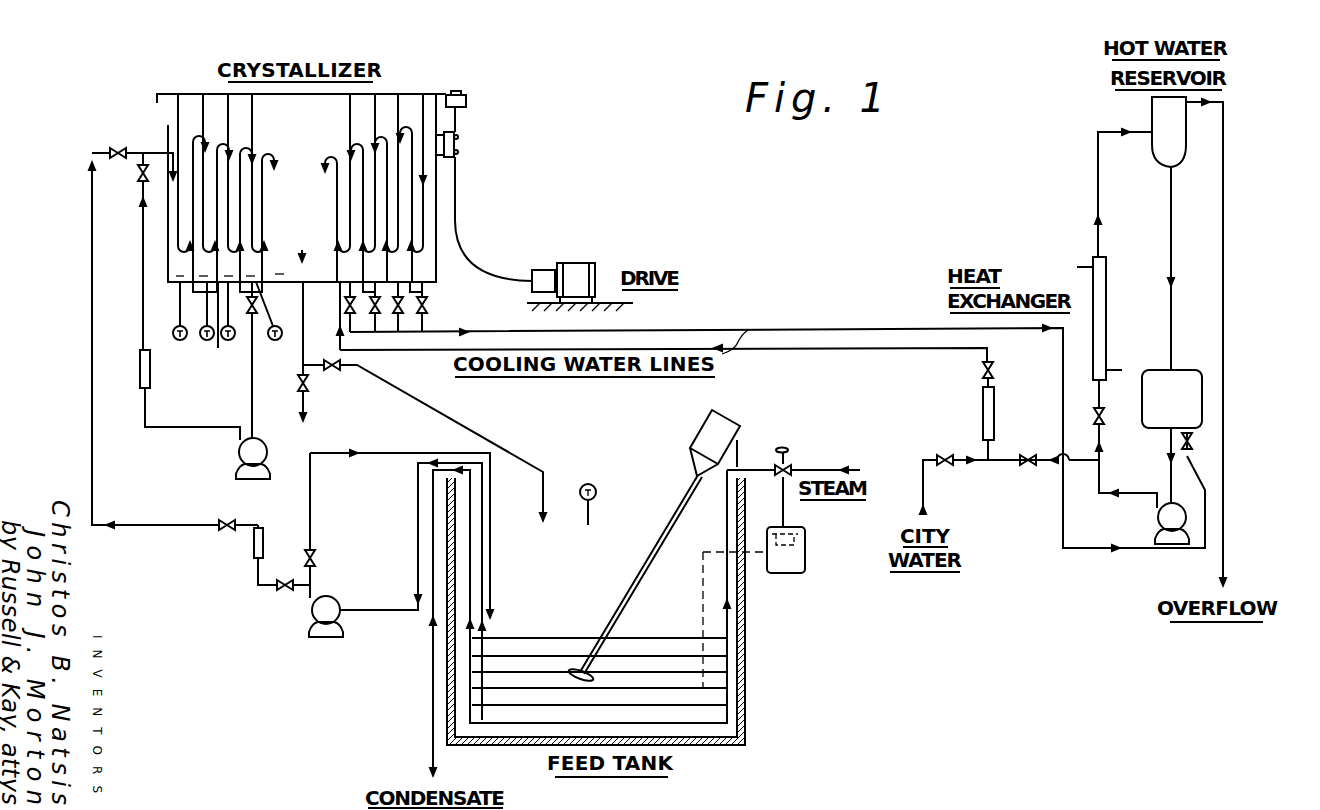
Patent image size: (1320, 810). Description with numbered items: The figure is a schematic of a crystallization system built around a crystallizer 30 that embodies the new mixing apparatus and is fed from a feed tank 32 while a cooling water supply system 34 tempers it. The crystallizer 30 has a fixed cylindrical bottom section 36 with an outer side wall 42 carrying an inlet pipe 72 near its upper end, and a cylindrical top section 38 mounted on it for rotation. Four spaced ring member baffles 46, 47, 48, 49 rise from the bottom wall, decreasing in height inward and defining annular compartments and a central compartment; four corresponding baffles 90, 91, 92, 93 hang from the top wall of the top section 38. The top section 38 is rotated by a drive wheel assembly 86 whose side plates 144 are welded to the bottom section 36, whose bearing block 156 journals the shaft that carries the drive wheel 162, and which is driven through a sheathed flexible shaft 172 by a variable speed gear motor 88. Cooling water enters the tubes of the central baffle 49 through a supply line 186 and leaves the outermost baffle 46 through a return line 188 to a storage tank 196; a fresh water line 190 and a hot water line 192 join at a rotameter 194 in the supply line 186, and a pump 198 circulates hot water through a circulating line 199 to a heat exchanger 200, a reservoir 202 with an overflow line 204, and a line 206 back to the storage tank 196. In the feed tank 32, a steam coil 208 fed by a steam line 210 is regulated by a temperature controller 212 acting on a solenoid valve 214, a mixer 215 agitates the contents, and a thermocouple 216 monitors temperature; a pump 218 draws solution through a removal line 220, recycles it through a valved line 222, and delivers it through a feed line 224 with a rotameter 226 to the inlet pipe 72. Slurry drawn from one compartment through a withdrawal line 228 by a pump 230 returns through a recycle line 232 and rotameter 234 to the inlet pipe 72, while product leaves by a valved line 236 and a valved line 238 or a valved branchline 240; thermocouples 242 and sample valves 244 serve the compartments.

The crystallizer 30 is at (109, 121).
The feed tank 32 is at (756, 728).
The cooling water supply system 34 is at (1030, 578).
The cylindrical bottom section 36 is at (158, 266).
The cylindrical top section 38 is at (173, 91).
The outer side wall 42 is at (168, 213).
The ring member baffle 46 is at (412, 179).
The ring member baffle 47 is at (387, 191).
The ring member baffle 48 is at (363, 208).
The ring member baffle 49 is at (337, 233).
The inlet pipe 72 is at (156, 151).
The drive wheel assembly 86 is at (482, 119).
The variable speed gear motor 88 is at (577, 262).
The ring member baffle 90 is at (178, 112).
The ring member baffle 91 is at (203, 123).
The ring member baffle 92 is at (228, 131).
The ring member baffle 93 is at (252, 147).
The side plates 144 is at (456, 158).
The bearing block 156 is at (458, 141).
The drive wheel 162 is at (467, 101).
The sheathed flexible shaft 172 is at (459, 227).
The supply line 186 is at (809, 350).
The return line 188 is at (798, 328).
The fresh water line 190 is at (924, 493).
The hot water line 192 is at (1008, 463).
The rotameter 194 is at (983, 414).
The storage tank 196 is at (1187, 370).
The pump 198 is at (1158, 520).
The circulating line 199 is at (1101, 475).
The heat exchanger 200 is at (1106, 320).
The reservoir 202 is at (1152, 113).
The overflow line 204 is at (1224, 182).
The line 206 is at (1171, 236).
The steam coil 208 is at (728, 692).
The steam line 210 is at (849, 466).
The temperature controller 212 is at (789, 575).
The solenoid valve 214 is at (789, 452).
The mixer 215 is at (711, 428).
The thermocouple 216 is at (595, 488).
The pump 218 is at (312, 613).
The removal line 220 is at (392, 612).
The valved line 222 is at (312, 498).
The feed line 224 is at (92, 210).
The rotameter 226 is at (255, 546).
The withdrawal line 228 is at (254, 405).
The pump 230 is at (240, 459).
The recycle line 232 is at (146, 420).
The rotameter 234 is at (150, 370).
The valved line 236 is at (343, 320).
The valved line 238 is at (310, 403).
The valved branchline 240 is at (405, 390).
The thermocouples 242 is at (245, 360).
The sample valves 244 is at (428, 305).